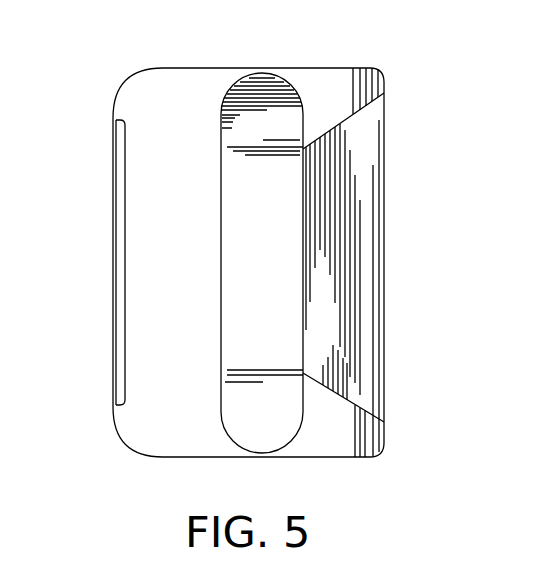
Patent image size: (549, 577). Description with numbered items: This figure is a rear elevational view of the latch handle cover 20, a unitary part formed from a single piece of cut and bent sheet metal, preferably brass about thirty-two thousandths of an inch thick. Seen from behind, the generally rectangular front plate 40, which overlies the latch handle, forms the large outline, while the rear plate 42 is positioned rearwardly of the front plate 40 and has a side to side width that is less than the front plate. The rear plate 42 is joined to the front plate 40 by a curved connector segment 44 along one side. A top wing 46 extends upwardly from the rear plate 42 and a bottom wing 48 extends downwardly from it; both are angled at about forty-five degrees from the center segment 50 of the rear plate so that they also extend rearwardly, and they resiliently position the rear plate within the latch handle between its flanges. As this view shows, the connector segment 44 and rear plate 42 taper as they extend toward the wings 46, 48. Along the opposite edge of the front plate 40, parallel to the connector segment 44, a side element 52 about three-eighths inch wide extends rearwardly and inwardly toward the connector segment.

The latch handle cover 20 is at (102, 119).
The front plate 40 is at (183, 197).
The rear plate 42 is at (334, 337).
The curved connector segment 44 is at (384, 325).
The top wing 46 is at (290, 88).
The bottom wing 48 is at (221, 418).
The center segment 50 is at (272, 294).
The side element 52 is at (125, 273).